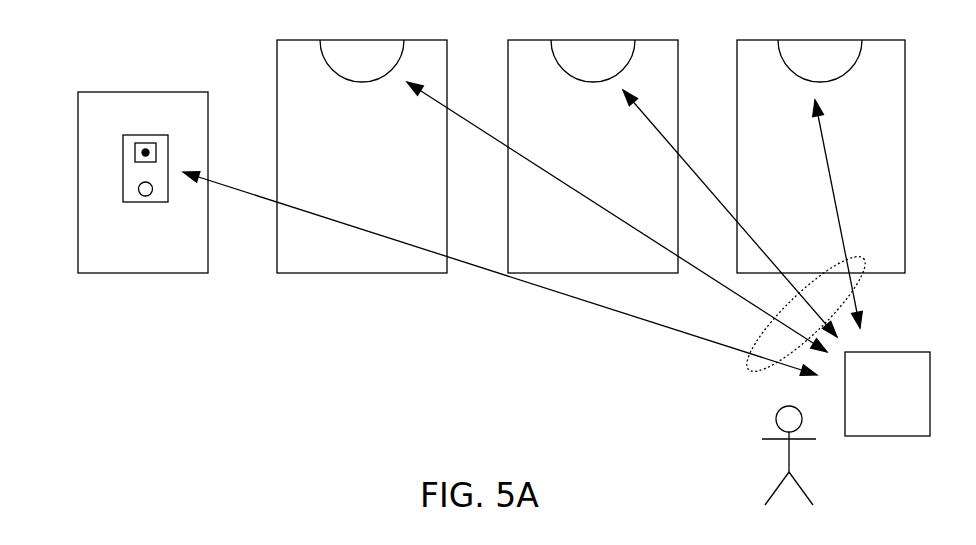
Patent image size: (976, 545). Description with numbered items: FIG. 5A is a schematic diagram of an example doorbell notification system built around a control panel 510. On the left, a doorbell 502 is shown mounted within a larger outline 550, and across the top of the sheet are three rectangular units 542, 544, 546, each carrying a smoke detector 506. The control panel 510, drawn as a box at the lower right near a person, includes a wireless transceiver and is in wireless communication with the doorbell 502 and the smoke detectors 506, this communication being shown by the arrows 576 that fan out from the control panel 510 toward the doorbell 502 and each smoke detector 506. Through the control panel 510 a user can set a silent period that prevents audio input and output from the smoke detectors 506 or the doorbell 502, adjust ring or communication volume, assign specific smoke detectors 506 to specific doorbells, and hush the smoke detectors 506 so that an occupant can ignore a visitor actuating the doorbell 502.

The user device housing 550 is at (102, 91).
The doorbell 502 is at (124, 135).
The first display screen 542 is at (308, 40).
The second display screen 544 is at (538, 40).
The third display screen 546 is at (768, 40).
The smoke detectors 506 is at (344, 70).
The control panel 510 is at (870, 408).
The arrows 576 is at (748, 370).